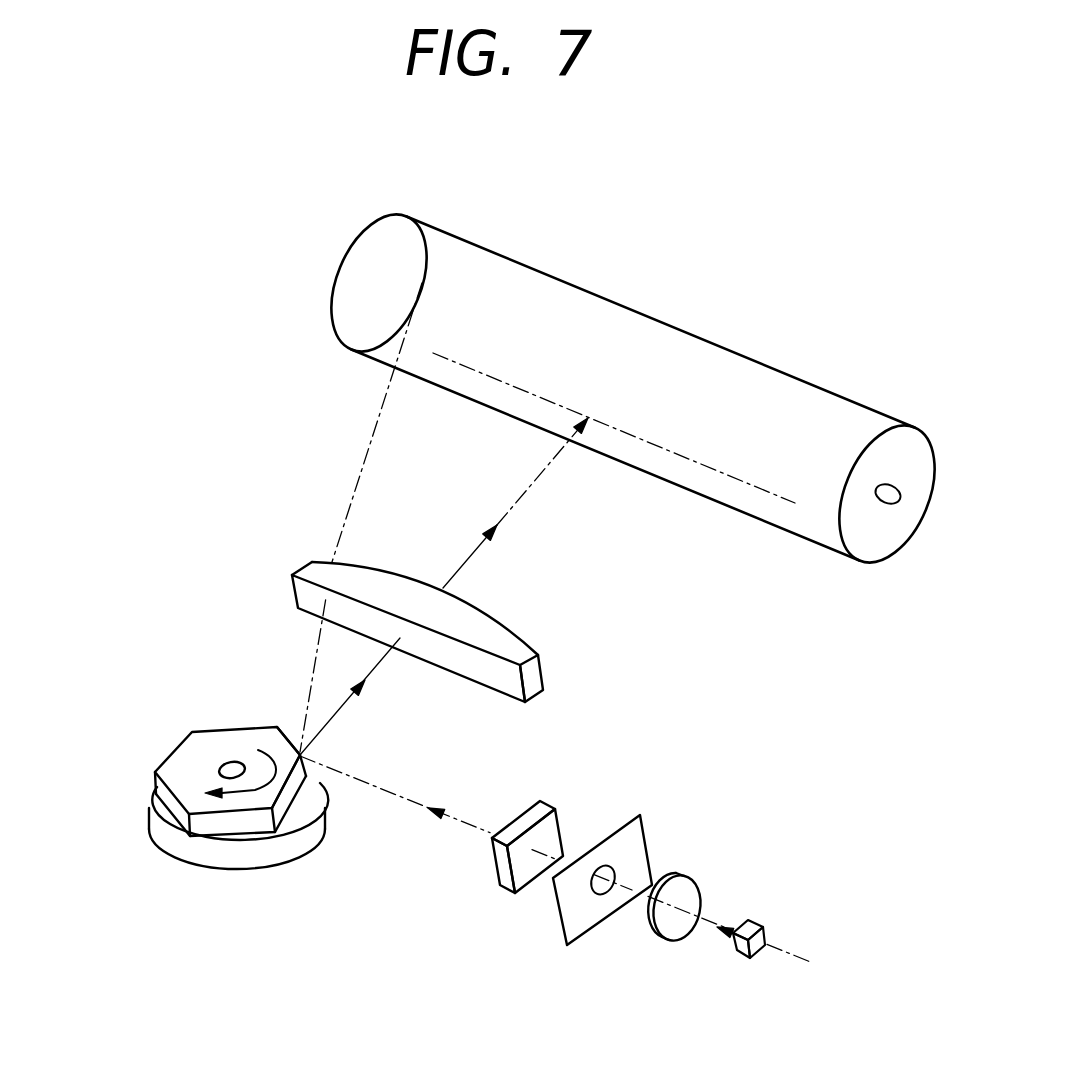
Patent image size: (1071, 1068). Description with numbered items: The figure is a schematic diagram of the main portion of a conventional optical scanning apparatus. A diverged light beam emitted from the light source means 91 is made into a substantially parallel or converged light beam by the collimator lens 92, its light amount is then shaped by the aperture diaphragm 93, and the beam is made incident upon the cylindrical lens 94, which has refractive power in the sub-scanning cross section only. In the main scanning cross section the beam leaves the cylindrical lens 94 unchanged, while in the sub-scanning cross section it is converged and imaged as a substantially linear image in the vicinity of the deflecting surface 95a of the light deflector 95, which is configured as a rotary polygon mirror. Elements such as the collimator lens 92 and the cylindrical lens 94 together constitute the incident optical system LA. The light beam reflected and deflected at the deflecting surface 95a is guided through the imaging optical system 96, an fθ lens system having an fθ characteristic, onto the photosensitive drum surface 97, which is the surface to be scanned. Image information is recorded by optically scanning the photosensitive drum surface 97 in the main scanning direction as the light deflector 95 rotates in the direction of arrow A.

The light source means 91 is at (737, 960).
The collimator lens 92 is at (673, 928).
The aperture diaphragm 93 is at (573, 905).
The cylindrical lens 94 is at (495, 865).
The light deflector 95 is at (178, 765).
The deflecting surface 95a is at (287, 736).
The imaging optical system 96 is at (373, 578).
The photosensitive drum surface 97 is at (802, 535).
The direction of arrow A is at (247, 790).
The incident optical system LA is at (747, 850).